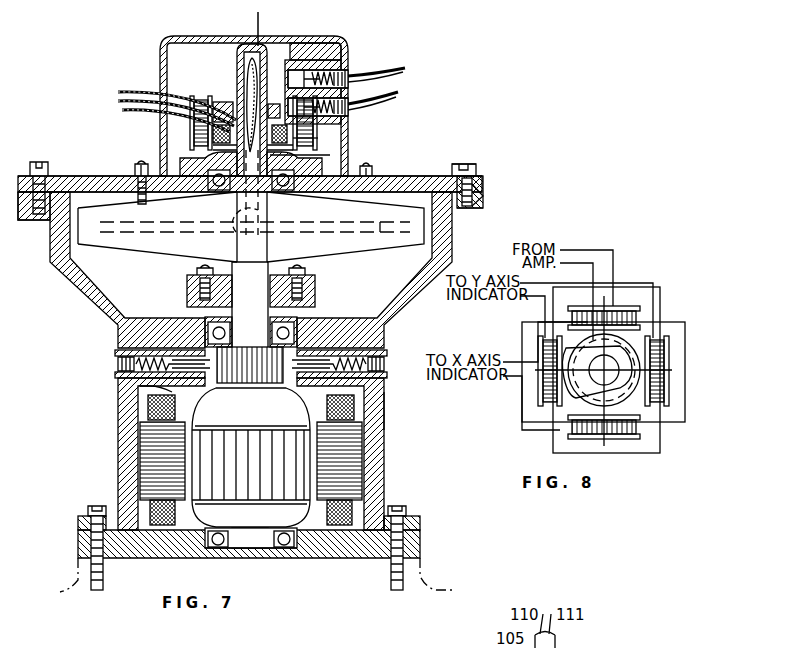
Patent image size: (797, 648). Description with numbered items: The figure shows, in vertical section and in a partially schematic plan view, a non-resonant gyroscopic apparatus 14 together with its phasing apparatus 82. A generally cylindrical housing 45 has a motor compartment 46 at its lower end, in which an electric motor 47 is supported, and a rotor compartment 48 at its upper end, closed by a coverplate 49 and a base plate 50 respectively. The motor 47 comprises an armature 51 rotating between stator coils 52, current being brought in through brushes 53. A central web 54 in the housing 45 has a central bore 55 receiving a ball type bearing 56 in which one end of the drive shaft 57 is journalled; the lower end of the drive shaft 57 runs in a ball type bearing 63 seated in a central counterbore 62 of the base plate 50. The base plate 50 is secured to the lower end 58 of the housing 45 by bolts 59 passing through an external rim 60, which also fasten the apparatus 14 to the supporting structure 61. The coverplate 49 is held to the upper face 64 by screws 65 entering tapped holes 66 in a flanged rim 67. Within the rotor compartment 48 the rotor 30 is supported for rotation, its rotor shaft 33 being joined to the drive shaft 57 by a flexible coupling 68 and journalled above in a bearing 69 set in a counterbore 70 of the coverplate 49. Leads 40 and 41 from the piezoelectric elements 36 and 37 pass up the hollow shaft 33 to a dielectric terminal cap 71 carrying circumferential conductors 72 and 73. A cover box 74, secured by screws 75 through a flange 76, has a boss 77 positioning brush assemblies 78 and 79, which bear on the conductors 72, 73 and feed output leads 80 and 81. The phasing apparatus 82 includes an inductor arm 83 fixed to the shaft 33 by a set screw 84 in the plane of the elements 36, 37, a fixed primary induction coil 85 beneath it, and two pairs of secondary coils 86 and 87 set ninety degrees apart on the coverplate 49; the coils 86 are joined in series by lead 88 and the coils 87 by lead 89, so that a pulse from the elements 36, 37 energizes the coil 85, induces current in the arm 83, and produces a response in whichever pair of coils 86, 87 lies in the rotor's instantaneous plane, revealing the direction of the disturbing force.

In FIG. 7, the gyroscopic apparatus 14 is at (398, 176).
In FIG. 7, the rotor 30 is at (180, 250).
In FIG. 7, the rotor shaft 33 is at (300, 138).
In FIG. 7, the piezoelectric element 36 is at (122, 220).
In FIG. 7, the piezoelectric element 37 is at (386, 220).
In FIG. 7, the lead 40 is at (240, 206).
In FIG. 7, the lead 41 is at (262, 206).
In FIG. 7, the housing 45 is at (372, 407).
In FIG. 7, the motor compartment 46 is at (134, 412).
In FIG. 7, the electric motor 47 is at (254, 413).
In FIG. 7, the rotor compartment 48 is at (436, 238).
In FIG. 7, the coverplate 49 is at (444, 176).
In FIG. 7, the base plate 50 is at (358, 556).
In FIG. 7, the armature 51 is at (366, 428).
In FIG. 7, the stator coils 52 is at (134, 462).
In FIG. 7, the brushes 53 is at (116, 364).
In FIG. 7, the central web 54 is at (136, 338).
In FIG. 7, the central bore 55 is at (314, 316).
In FIG. 7, the ball type bearing 56 is at (197, 312).
In FIG. 7, the drive shaft 57 is at (258, 323).
In FIG. 7, the lower end 58 is at (384, 514).
In FIG. 7, the bolts 59 is at (410, 514).
In FIG. 7, the external rim 60 is at (86, 521).
In FIG. 7, the structure 61 is at (446, 590).
In FIG. 7, the central counterbore 62 is at (204, 550).
In FIG. 7, the ball type bearing 63 is at (276, 550).
In FIG. 7, the upper face 64 is at (486, 180).
In FIG. 7, the screws 65 is at (477, 166).
In FIG. 7, the tapped holes 66 is at (478, 209).
In FIG. 7, the flanged rim 67 is at (486, 196).
In FIG. 7, the flexible coupling 68 is at (302, 276).
In FIG. 7, the bearing 69 is at (316, 152).
In FIG. 7, the counterbore 70 is at (340, 166).
In FIG. 7, the terminal cap 71 is at (264, 36).
In FIG. 7, the circumferential conductor 72 is at (237, 60).
In FIG. 7, the circumferential conductor 73 is at (240, 90).
In FIG. 7, the cover box 74 is at (162, 52).
In FIG. 7, the screws 75 is at (140, 164).
In FIG. 7, the flange 76 is at (126, 174).
In FIG. 7, the boss 77 is at (296, 38).
In FIG. 7, the brush assembly 78 is at (350, 62).
In FIG. 7, the brush assembly 79 is at (350, 90).
In FIG. 7, the lead 80 is at (392, 62).
In FIG. 7, the lead 81 is at (402, 86).
In FIG. 8, the phasing apparatus 82 is at (688, 299).
In FIG. 7, the inductor arm 83 is at (216, 92).
In FIG. 8, the inductor arm 83 is at (588, 387).
In FIG. 7, the set screw 84 is at (300, 111).
In FIG. 7, the primary induction coil 85 is at (205, 111).
In FIG. 8, the primary induction coil 85 is at (618, 392).
In FIG. 8, the secondary coils 86 is at (542, 390).
In FIG. 8, the secondary coils 87 is at (626, 306).
In FIG. 8, the lead 88 is at (668, 432).
In FIG. 8, the lead 89 is at (668, 332).